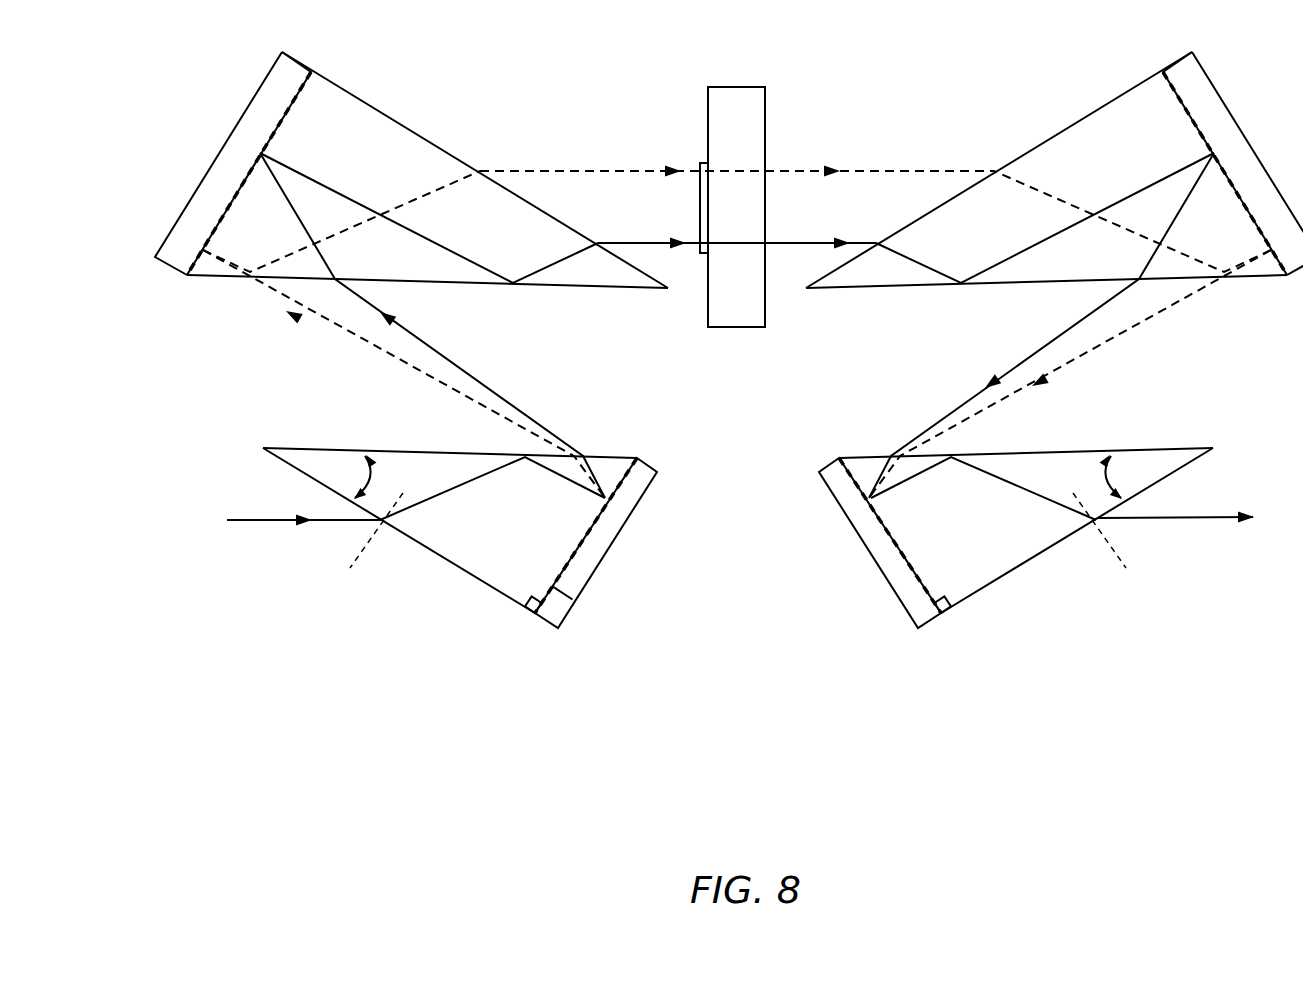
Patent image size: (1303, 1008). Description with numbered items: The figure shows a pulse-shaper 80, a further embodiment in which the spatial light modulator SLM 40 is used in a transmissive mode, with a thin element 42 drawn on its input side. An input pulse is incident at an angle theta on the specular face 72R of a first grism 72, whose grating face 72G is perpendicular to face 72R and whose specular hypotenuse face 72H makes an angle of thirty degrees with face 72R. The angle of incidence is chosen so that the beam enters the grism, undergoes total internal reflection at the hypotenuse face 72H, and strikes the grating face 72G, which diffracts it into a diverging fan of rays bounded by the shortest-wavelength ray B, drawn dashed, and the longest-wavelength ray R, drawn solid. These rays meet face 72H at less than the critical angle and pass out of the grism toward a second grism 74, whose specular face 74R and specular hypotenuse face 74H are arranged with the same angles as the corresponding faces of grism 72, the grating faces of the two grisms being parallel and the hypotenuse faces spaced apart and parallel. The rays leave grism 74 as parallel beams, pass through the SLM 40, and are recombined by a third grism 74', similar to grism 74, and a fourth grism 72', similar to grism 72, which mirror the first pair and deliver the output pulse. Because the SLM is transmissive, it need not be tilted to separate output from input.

The pulse-shaper 80 is at (729, 440).
The grism 74 is at (411, 203).
The specular face 74R is at (415, 133).
The specular hypotenuse face 74H is at (577, 289).
The grism 74' is at (1054, 161).
The SLM 40 is at (703, 103).
The thin element on plate 40 42 is at (700, 162).
The grism 72 is at (461, 544).
The specular hypotenuse face 72H is at (458, 452).
The specular face 72R is at (468, 572).
The grating face 72G is at (575, 601).
The grism 72' is at (1014, 538).
The longest-wavelength ray R is at (447, 358).
The shortest-wavelength ray B is at (388, 362).